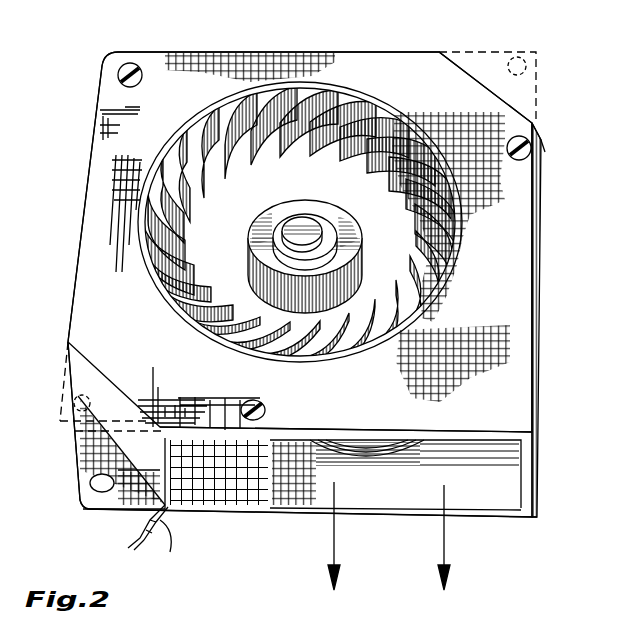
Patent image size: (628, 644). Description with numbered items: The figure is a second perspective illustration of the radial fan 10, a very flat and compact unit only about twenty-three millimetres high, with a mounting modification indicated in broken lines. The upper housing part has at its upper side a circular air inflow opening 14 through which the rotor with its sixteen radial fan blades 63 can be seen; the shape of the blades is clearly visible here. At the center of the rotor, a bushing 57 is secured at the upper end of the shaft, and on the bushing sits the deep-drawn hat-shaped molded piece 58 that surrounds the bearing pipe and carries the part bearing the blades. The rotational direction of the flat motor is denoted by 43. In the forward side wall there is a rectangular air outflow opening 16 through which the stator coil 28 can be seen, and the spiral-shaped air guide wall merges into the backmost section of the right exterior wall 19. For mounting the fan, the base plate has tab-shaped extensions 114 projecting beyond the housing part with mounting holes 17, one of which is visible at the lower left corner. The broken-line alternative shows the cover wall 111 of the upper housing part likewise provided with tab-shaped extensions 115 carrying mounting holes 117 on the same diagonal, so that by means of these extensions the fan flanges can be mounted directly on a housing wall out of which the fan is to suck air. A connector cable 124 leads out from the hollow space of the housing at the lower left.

The radial fan 10 is at (90, 70).
The circular air inflow opening 14 is at (272, 100).
The rectangular air outflow opening 16 is at (508, 489).
The holes 17 is at (92, 489).
The right exterior wall 19 is at (544, 224).
The coil 28 is at (389, 455).
The rotational direction 43 is at (357, 233).
The bushing 57 is at (306, 225).
The hat-shaped molded piece 58 is at (268, 232).
The radial fan blades 63 is at (391, 113).
The cover wall 111 is at (108, 345).
The tab-shaped extensions 114 is at (545, 148).
The tab-shaped extensions 115 is at (538, 72).
The mounting holes 117 is at (524, 58).
The connector cable 124 is at (165, 540).